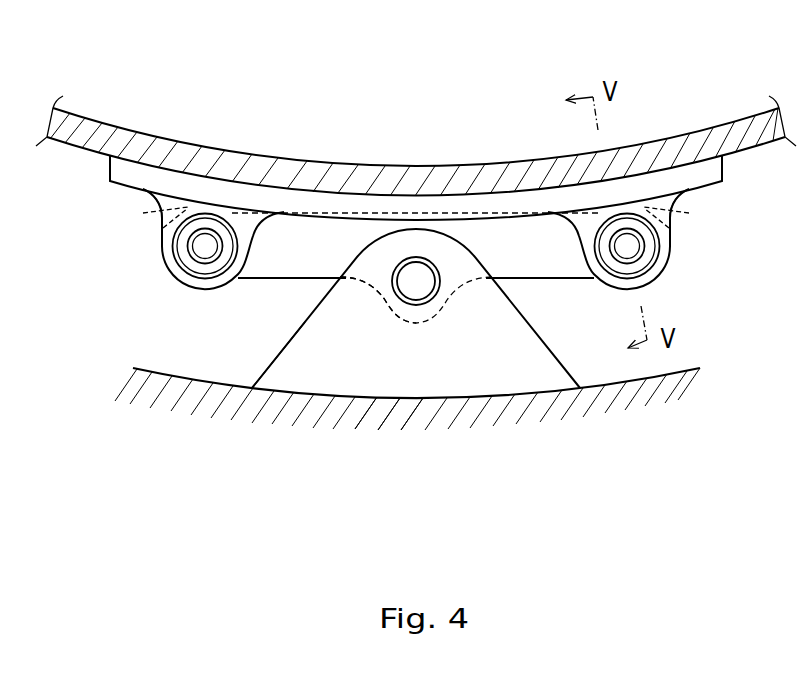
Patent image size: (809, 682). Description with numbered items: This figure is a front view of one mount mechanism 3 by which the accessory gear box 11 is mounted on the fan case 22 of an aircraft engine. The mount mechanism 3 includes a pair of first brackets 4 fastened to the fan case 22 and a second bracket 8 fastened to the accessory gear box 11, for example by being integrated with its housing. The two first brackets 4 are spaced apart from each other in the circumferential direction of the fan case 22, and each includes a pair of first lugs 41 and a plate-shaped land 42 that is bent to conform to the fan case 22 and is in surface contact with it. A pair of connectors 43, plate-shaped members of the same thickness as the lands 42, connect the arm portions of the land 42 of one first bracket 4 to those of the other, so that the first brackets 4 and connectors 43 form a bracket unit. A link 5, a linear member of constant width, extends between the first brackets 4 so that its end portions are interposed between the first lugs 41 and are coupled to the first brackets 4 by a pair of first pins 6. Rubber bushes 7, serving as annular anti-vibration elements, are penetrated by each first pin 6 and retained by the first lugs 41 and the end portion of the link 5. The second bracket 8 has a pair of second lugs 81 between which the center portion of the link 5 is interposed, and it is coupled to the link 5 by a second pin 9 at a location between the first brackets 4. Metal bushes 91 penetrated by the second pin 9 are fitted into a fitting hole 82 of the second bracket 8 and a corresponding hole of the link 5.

The mount mechanism 3 is at (215, 343).
The first bracket 4 is at (152, 267).
The first lug 41 is at (178, 210).
The land 42 is at (137, 172).
The connector 43 is at (448, 210).
The link 5 is at (322, 247).
The first pin 6 is at (205, 246).
The rubber bush 7 is at (228, 240).
The second bracket 8 is at (565, 362).
The second lug 81 is at (327, 358).
The fitting hole 82 is at (378, 300).
The second pin 9 is at (418, 285).
The metal bush 91 is at (395, 285).
The accessory gear box 11 is at (408, 417).
The fan case 22 is at (404, 178).